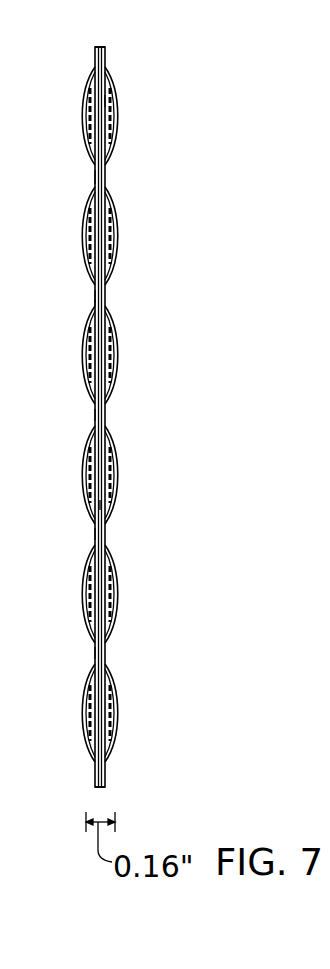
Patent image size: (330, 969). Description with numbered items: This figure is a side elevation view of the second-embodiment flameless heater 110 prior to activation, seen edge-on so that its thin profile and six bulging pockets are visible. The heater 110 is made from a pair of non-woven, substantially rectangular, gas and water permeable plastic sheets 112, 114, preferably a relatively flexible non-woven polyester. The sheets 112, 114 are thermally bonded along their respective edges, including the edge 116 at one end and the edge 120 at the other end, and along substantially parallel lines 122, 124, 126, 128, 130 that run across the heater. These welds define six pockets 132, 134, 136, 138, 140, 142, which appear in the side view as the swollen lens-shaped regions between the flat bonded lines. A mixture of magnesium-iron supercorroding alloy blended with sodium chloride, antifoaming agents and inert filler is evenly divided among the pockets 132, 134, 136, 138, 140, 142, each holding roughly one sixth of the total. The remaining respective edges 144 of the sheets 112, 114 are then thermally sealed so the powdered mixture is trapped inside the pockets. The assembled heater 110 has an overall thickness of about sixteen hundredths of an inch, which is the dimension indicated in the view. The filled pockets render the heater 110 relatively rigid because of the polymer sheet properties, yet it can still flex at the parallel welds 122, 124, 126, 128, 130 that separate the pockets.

The flameless heater 110 is at (209, 303).
The plastic sheet 112 is at (82, 101).
The plastic sheet 114 is at (118, 101).
The edge 116 is at (107, 55).
The edge 120 is at (108, 773).
The parallel line (weld) 122 is at (113, 83).
The parallel line (weld) 124 is at (108, 296).
The parallel line (weld) 126 is at (108, 415).
The parallel line (weld) 128 is at (108, 533).
The parallel line (weld) 130 is at (108, 648).
The pocket 132 is at (117, 118).
The pocket 134 is at (118, 243).
The pocket 136 is at (118, 361).
The pocket 138 is at (117, 480).
The pocket 140 is at (116, 598).
The pocket 142 is at (116, 716).
The remaining edge 144 is at (100, 505).